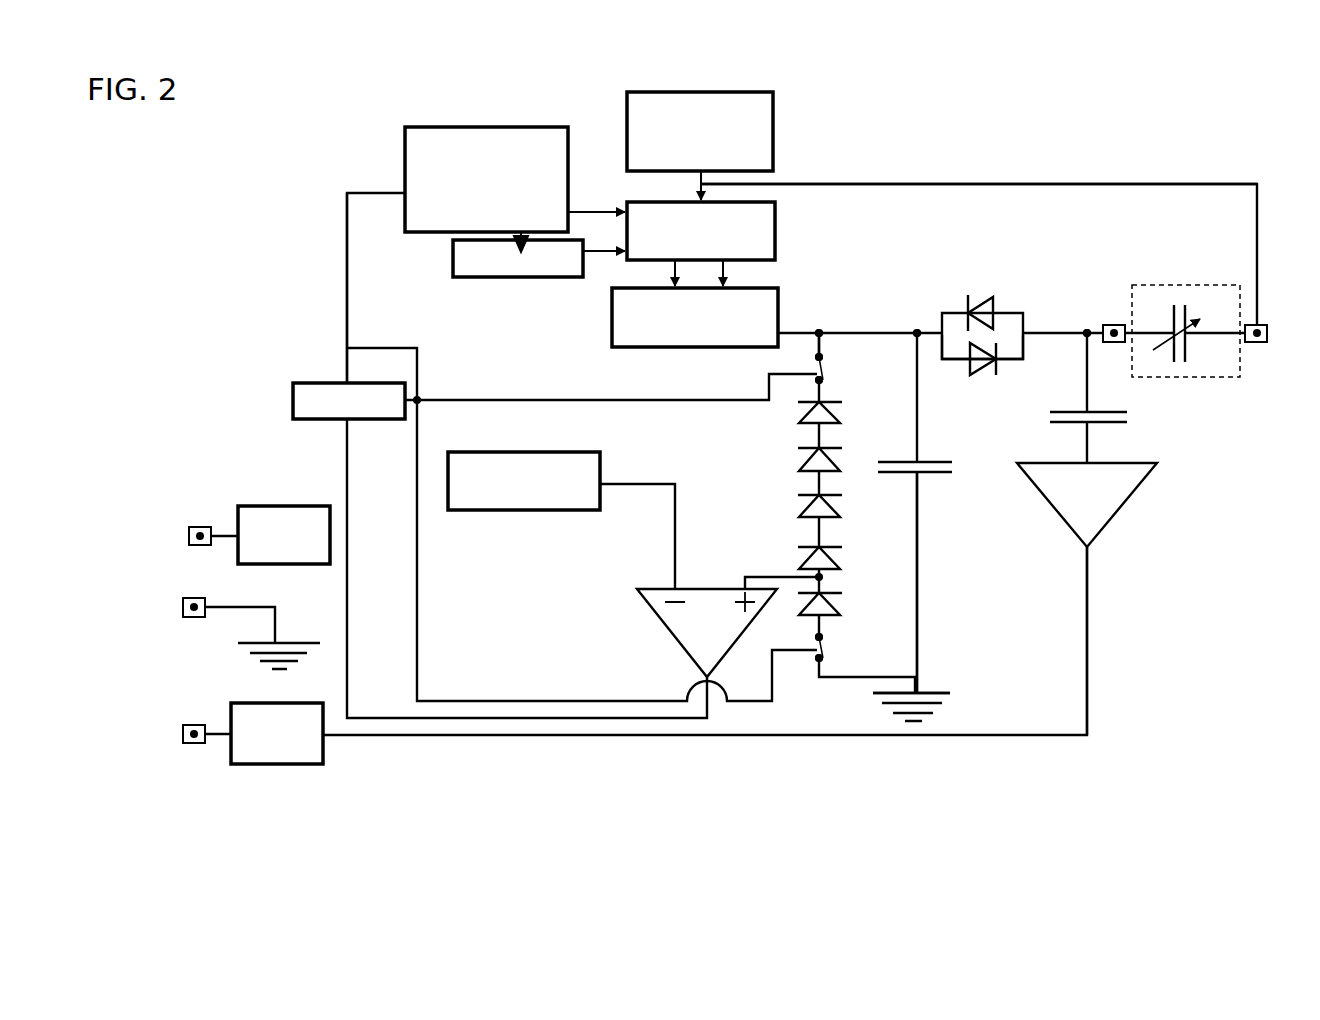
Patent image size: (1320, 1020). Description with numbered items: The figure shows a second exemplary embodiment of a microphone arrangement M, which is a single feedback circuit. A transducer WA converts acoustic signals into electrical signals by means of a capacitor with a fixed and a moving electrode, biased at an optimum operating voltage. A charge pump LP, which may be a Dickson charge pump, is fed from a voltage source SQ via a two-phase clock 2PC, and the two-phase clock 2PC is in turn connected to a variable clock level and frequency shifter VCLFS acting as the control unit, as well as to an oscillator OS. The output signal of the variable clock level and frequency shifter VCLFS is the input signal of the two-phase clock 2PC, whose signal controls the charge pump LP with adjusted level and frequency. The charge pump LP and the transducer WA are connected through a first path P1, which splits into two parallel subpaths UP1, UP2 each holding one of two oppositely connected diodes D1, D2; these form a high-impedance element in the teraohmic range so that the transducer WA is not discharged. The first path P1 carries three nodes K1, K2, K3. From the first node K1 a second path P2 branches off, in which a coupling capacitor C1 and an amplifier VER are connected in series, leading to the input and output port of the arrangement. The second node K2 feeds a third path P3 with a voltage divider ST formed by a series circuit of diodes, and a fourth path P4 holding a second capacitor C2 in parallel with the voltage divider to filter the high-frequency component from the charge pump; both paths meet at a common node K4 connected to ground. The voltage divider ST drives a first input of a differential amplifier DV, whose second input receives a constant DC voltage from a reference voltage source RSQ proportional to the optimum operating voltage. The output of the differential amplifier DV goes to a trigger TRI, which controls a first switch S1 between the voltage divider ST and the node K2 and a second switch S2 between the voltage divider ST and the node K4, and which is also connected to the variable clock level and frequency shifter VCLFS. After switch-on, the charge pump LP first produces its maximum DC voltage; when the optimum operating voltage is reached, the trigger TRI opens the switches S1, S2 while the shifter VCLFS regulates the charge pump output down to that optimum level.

The variable clock level and frequency shifter VCLFS is at (405, 162).
The voltage source SQ is at (682, 128).
The two-phase clock 2PC is at (665, 232).
The oscillator OS is at (507, 250).
The charge pump LP is at (632, 333).
The trigger TRI is at (336, 398).
The reference voltage source RSQ is at (470, 482).
The microphone arrangement M is at (222, 288).
The first path P1 is at (887, 333).
The second node K2 is at (819, 333).
The third node K3 is at (915, 337).
The first node K1 is at (1087, 335).
The first subpath UP1 is at (1005, 330).
The second subpath UP2 is at (1015, 363).
The first diode D1 is at (975, 298).
The second diode D2 is at (977, 367).
The coupling capacitor C1 is at (1103, 415).
The second capacitor C2 is at (940, 473).
The transducer WA is at (1197, 363).
The amplifier VER is at (1095, 488).
The differential amplifier DV is at (693, 620).
The third path P3 is at (817, 352).
The first switch S1 is at (817, 375).
The voltage divider ST is at (800, 465).
The second switch S2 is at (817, 652).
The fourth path P4 is at (917, 577).
The common node K4 is at (917, 677).
The second path P2 is at (1090, 610).